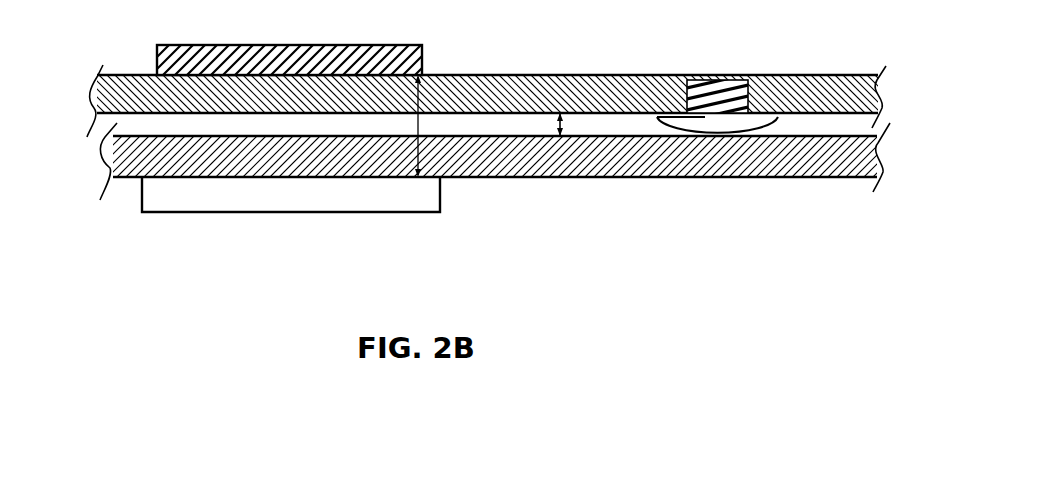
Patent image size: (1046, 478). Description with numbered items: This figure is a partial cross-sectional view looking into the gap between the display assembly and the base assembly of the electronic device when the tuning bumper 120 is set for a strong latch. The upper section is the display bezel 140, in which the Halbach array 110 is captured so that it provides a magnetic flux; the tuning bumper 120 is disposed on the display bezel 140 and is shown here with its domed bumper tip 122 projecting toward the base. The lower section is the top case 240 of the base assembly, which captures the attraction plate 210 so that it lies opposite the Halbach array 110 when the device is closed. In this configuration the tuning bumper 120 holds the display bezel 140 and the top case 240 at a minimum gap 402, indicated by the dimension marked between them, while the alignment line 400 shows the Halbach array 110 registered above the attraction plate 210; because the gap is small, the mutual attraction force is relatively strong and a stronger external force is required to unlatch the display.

The Halbach array 110 is at (148, 54).
The tuning bumper 120 is at (764, 88).
The lens 122 is at (692, 125).
The display bezel 140 is at (823, 87).
The attraction plate 210 is at (388, 203).
The top case 240 is at (767, 167).
The alignment line 400 is at (420, 102).
The minimum gap 402 is at (567, 117).